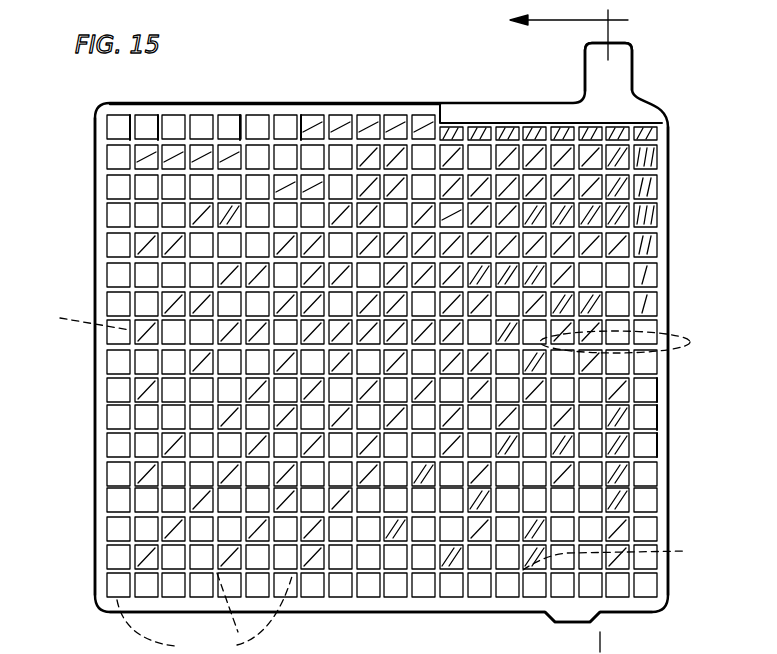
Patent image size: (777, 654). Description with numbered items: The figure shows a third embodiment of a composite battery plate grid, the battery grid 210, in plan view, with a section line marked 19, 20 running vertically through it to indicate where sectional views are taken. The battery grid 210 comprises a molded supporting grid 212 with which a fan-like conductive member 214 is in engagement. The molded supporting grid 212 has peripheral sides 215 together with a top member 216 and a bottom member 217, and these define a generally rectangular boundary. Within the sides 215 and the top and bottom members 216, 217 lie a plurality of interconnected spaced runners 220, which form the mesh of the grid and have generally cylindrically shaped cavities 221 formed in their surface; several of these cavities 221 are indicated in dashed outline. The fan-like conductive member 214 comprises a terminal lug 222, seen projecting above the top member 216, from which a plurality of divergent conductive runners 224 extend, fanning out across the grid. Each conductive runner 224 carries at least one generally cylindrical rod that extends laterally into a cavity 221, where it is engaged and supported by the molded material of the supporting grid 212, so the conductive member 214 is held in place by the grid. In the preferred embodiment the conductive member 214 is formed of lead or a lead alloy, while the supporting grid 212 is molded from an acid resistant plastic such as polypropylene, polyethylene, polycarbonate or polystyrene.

The battery grid 210 is at (316, 64).
The molded supporting grid 212 is at (126, 214).
The fan-like conductive member 214 is at (536, 104).
The peripheral sides 215 is at (672, 313).
The top member 216 is at (362, 103).
The bottom member 217 is at (393, 605).
The interconnected spaced runners 220 is at (307, 127).
The cylindrically shaped cavities 221 is at (672, 345).
The terminal lug 222 is at (615, 63).
The divergent conductive runners 224 is at (392, 154).
The section line 19 is at (569, 36).
The section line 20 is at (555, 639).